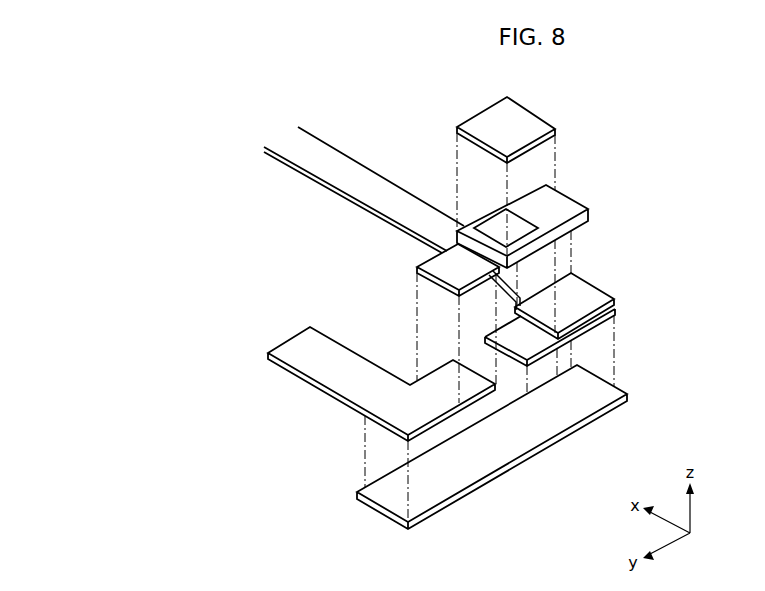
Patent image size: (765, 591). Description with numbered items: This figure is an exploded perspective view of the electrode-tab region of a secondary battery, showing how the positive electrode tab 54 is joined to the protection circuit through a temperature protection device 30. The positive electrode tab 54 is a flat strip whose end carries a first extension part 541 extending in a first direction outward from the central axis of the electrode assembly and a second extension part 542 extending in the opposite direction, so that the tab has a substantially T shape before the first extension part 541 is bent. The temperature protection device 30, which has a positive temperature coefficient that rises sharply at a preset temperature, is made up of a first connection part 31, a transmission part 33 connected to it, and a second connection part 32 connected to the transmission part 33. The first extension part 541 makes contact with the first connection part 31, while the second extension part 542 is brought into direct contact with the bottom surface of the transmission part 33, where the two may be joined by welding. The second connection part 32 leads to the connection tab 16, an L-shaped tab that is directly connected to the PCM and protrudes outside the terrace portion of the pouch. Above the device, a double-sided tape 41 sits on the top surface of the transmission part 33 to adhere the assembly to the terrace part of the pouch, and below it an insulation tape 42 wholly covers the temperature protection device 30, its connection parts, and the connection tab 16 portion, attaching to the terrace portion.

The connection tab 16 is at (335, 379).
The temperature protection device 30 is at (555, 233).
The first connection part 31 is at (570, 203).
The second connection part 32 is at (489, 279).
The transmission part 33 is at (517, 225).
The double-sided tape 41 is at (525, 118).
The insulation tape 42 is at (475, 468).
The positive electrode tab 54 is at (367, 196).
The first extension part 541 is at (593, 290).
The second extension part 542 is at (537, 338).